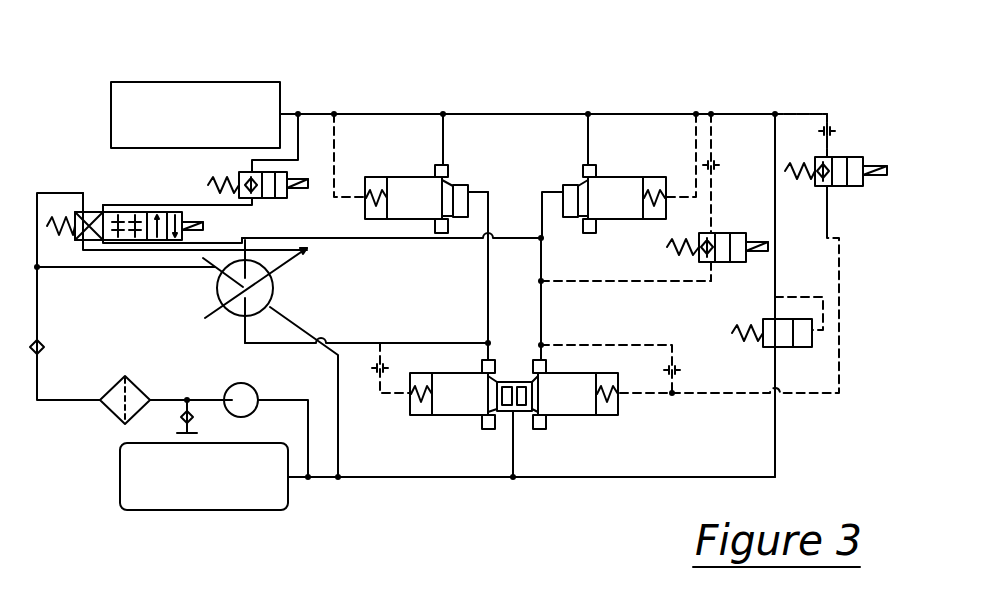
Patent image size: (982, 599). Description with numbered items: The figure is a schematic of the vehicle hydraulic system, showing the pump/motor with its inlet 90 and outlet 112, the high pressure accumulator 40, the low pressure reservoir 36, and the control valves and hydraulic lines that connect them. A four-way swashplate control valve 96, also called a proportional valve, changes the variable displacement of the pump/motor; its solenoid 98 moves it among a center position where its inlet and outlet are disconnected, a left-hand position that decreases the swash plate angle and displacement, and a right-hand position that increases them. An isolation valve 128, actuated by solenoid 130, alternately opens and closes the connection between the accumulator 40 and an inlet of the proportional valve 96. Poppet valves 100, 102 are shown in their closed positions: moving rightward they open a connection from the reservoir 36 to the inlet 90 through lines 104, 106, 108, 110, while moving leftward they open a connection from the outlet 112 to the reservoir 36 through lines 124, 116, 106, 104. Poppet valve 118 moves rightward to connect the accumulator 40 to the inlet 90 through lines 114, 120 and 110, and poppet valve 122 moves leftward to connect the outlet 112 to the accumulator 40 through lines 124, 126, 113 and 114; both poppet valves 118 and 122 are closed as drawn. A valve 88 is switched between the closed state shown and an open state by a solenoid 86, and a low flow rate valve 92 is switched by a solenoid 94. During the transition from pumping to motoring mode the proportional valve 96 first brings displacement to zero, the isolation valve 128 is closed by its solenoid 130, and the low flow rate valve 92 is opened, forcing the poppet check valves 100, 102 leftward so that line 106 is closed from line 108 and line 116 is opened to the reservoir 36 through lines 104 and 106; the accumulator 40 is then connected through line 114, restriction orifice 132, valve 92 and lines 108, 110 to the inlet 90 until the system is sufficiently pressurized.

The reservoir 36 is at (203, 510).
The accumulator 40 is at (193, 82).
The solenoid 86 is at (757, 233).
The valve 88 is at (717, 263).
The inlet 90 is at (218, 285).
The low flow rate valve 92 is at (848, 187).
The solenoid 94 is at (864, 166).
The four-way swashplate control valve 96 is at (176, 212).
The solenoid 98 is at (203, 231).
The poppet valve 100 is at (452, 416).
The poppet valve 102 is at (572, 372).
The line 104 is at (420, 478).
The line 106 is at (513, 443).
The line 108 is at (541, 310).
The line 110 is at (385, 241).
The outlet 112 is at (230, 317).
The line 113 is at (448, 137).
The line 114 is at (378, 112).
The line 116 is at (490, 356).
The poppet valve 118 is at (637, 177).
The line 120 is at (546, 242).
The poppet valve 122 is at (392, 177).
The line 124 is at (437, 342).
The line 126 is at (488, 276).
The isolation valve 128 is at (238, 172).
The solenoid 130 is at (304, 179).
The restriction orifice 132 is at (822, 132).